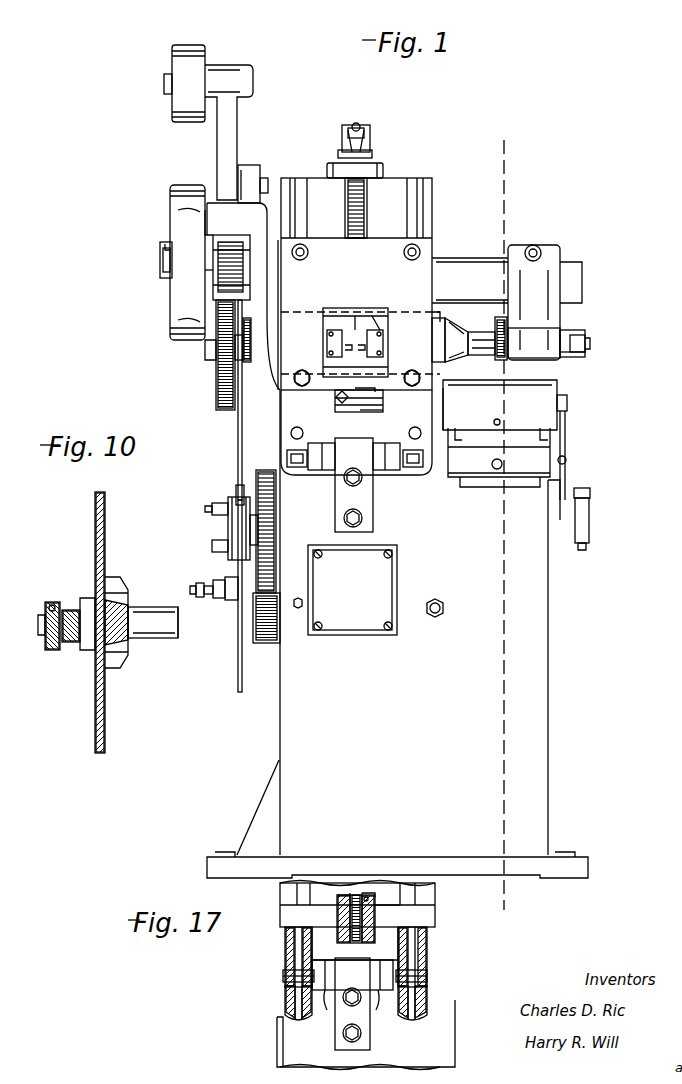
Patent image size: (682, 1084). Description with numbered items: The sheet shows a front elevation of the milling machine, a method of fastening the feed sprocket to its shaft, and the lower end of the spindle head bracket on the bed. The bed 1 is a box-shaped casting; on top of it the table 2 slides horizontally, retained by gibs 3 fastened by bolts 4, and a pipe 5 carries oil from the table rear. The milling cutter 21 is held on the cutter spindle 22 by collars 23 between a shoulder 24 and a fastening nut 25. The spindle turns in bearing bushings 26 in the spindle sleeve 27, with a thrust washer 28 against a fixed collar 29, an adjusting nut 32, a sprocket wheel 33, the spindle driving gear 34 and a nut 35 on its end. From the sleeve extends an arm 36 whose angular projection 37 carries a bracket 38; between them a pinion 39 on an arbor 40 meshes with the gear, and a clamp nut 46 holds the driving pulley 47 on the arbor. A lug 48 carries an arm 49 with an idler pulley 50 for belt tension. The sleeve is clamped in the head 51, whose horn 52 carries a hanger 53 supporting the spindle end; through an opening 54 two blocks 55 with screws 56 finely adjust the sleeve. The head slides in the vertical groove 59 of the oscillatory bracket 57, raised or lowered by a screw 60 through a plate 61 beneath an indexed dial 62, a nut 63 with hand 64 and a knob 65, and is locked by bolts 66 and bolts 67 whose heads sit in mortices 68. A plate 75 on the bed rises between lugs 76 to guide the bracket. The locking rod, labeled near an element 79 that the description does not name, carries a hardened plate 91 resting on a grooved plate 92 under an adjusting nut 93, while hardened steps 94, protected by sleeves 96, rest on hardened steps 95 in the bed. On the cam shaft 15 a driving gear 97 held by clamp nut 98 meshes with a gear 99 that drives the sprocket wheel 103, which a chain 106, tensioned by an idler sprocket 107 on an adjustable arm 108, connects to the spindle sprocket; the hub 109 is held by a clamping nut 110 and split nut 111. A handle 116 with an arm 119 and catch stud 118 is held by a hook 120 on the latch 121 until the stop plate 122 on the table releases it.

In FIG. 1, the bed 1 is at (413, 700).
In FIG. 17, the bed 1 is at (433, 1035).
In FIG. 1, the table 2 is at (500, 405).
In FIG. 1, the gibs 3 is at (456, 458).
In FIG. 1, the bolts 4 is at (470, 484).
In FIG. 1, the pipe 5 is at (530, 167).
In FIG. 1, the cam shaft 15 is at (230, 536).
In FIG. 1, the milling cutter 21 is at (510, 365).
In FIG. 1, the cutter spindle 22 is at (586, 345).
In FIG. 1, the collars 23 is at (478, 358).
In FIG. 1, the shoulder 24 is at (462, 335).
In FIG. 1, the fastening nut 25 is at (586, 350).
In FIG. 1, the bearing bushings 26 is at (440, 330).
In FIG. 1, the spindle sleeve 27 is at (335, 316).
In FIG. 1, the thrust washer 28 is at (445, 318).
In FIG. 1, the collar 29 is at (460, 380).
In FIG. 1, the adjusting nut 32 is at (250, 328).
In FIG. 1, the sprocket wheel 33 is at (238, 348).
In FIG. 1, the spindle driving gear 34 is at (216, 394).
In FIG. 1, the nut 35 is at (208, 350).
In FIG. 1, the arm 36 is at (242, 267).
In FIG. 1, the angular projection 37 is at (243, 296).
In FIG. 1, the bracket 38 is at (205, 217).
In FIG. 1, the pinion 39 is at (215, 268).
In FIG. 1, the arbor 40 is at (160, 261).
In FIG. 1, the clamp nut 46 is at (165, 246).
In FIG. 1, the driving pulley 47 is at (187, 262).
In FIG. 1, the lug 48 is at (250, 165).
In FIG. 1, the arm 49 is at (217, 147).
In FIG. 1, the idler pulley 50 is at (184, 83).
In FIG. 1, the head 51 is at (360, 284).
In FIG. 1, the horn 52 is at (458, 284).
In FIG. 1, the hanger 53 is at (534, 302).
In FIG. 1, the opening 54 is at (385, 312).
In FIG. 1, the blocks 55 is at (345, 308).
In FIG. 1, the screws 56 is at (327, 340).
In FIG. 1, the oscillatory bracket 57 is at (400, 200).
In FIG. 17, the oscillatory bracket 57 is at (334, 947).
In FIG. 1, the vertical groove 59 is at (310, 193).
In FIG. 17, the vertical groove 59 is at (374, 894).
In FIG. 1, the screw 60 is at (345, 224).
In FIG. 1, the plate 61 is at (378, 165).
In FIG. 1, the indexed dial 62 is at (338, 153).
In FIG. 1, the nut 63 is at (371, 145).
In FIG. 1, the hand 64 is at (342, 133).
In FIG. 1, the knob 65 is at (378, 108).
In FIG. 1, the bolts 66 is at (308, 252).
In FIG. 1, the bolts 67 is at (302, 370).
In FIG. 1, the mortices 68 is at (297, 212).
In FIG. 17, the mortices 68 is at (290, 896).
In FIG. 1, the plate 75 is at (354, 485).
In FIG. 17, the plate 75 is at (352, 1004).
In FIG. 1, the lugs 76 is at (330, 458).
In FIG. 17, the lugs 76 is at (352, 1001).
In FIG. 1, the screw 79 is at (340, 396).
In FIG. 17, the screw 79 is at (342, 921).
In FIG. 1, the hardened plate 91 is at (380, 410).
In FIG. 17, the hardened plate 91 is at (378, 917).
In FIG. 1, the plate 92 is at (353, 410).
In FIG. 17, the plate 92 is at (420, 923).
In FIG. 1, the adjusting nut 93 is at (368, 394).
In FIG. 17, the adjusting nut 93 is at (340, 897).
In FIG. 1, the hardened steps 94 is at (290, 450).
In FIG. 17, the hardened steps 94 is at (285, 951).
In FIG. 1, the hardened steps 95 is at (297, 467).
In FIG. 17, the hardened steps 95 is at (285, 998).
In FIG. 17, the sleeves 96 is at (283, 977).
In FIG. 1, the driving gear 97 is at (276, 510).
In FIG. 1, the clamp nut 98 is at (258, 530).
In FIG. 1, the gear 99 is at (260, 645).
In FIG. 1, the sprocket wheel 103 is at (236, 672).
In FIG. 10, the sprocket wheel 103 is at (106, 722).
In FIG. 1, the chain 106 is at (238, 440).
In FIG. 1, the idler sprocket 107 is at (238, 488).
In FIG. 1, the adjustable arm 108 is at (212, 512).
In FIG. 1, the hub 109 is at (228, 604).
In FIG. 10, the hub 109 is at (118, 665).
In FIG. 1, the clamping nut 110 is at (218, 596).
In FIG. 10, the clamping nut 110 is at (68, 645).
In FIG. 1, the split nut 111 is at (212, 588).
In FIG. 10, the split nut 111 is at (45, 652).
In FIG. 1, the handle 116 is at (592, 493).
In FIG. 1, the catch stud 118 is at (578, 550).
In FIG. 1, the arm 119 is at (590, 518).
In FIG. 1, the hook 120 is at (558, 520).
In FIG. 1, the latch 121 is at (570, 480).
In FIG. 1, the stop plate 122 is at (567, 404).